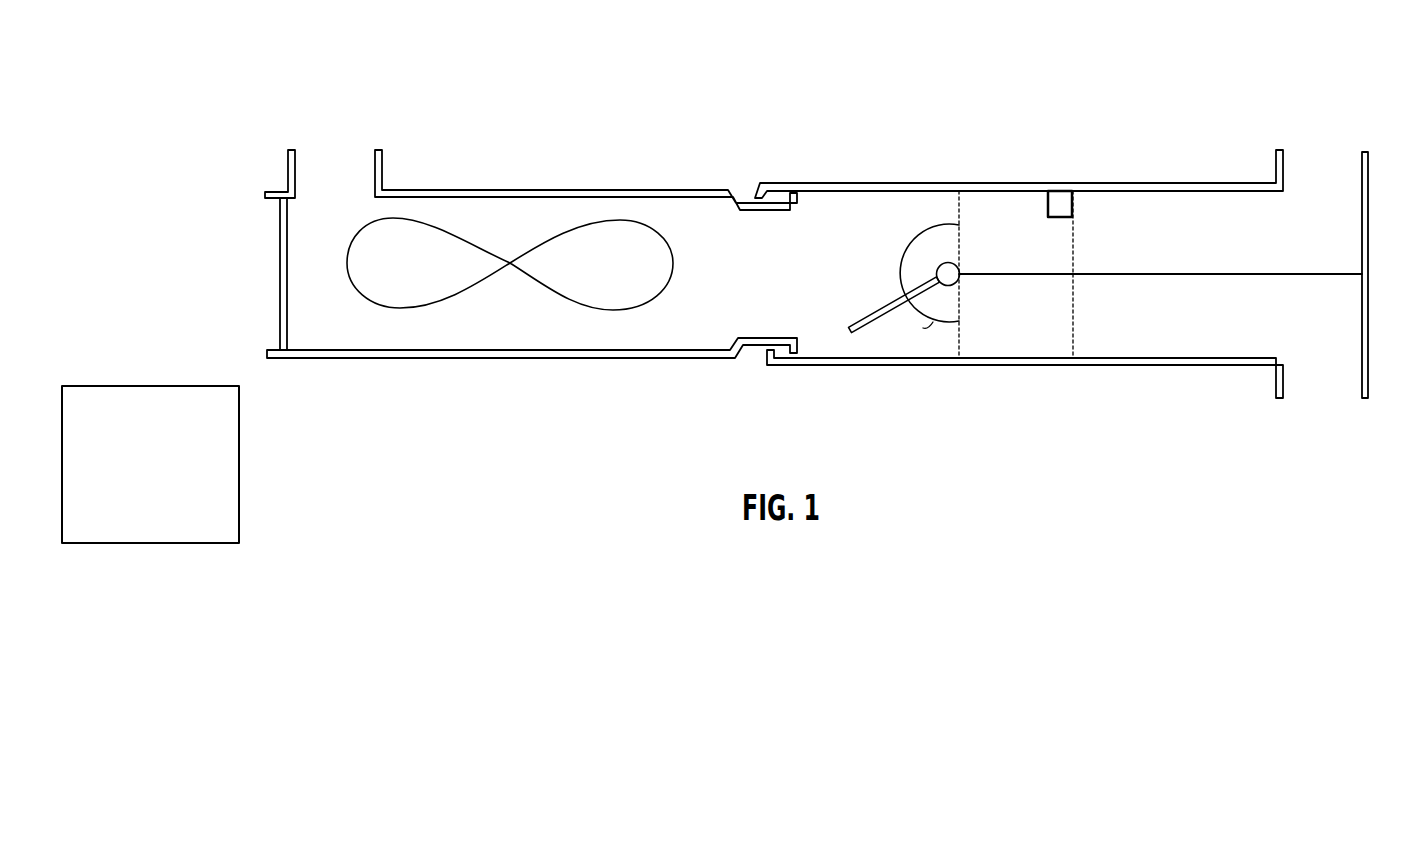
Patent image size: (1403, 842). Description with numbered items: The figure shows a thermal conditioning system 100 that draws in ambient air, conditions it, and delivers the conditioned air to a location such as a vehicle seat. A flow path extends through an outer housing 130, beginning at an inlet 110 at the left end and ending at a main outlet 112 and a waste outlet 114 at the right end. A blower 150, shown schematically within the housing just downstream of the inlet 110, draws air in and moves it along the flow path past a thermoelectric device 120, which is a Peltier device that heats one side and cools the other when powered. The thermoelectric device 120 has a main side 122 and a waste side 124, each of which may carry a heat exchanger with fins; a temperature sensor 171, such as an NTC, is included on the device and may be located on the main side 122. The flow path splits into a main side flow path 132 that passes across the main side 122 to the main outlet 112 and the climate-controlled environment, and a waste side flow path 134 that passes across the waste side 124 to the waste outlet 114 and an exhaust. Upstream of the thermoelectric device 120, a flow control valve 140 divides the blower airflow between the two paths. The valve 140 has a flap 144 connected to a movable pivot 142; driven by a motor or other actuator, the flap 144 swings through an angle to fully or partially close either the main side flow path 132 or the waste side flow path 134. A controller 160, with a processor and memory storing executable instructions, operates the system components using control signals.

The thermal conditioning system 100 is at (262, 76).
The inlet 110 is at (339, 158).
The main outlet 112 is at (1338, 156).
The waste outlet 114 is at (1318, 398).
The thermoelectric device (TED) 120 is at (1084, 261).
The main side 122 is at (1007, 200).
The waste side 124 is at (1008, 352).
The outer housing 130 is at (862, 365).
The main side flow path 132 is at (1169, 205).
The waste side flow path 134 is at (1154, 338).
The flow control valve 140 is at (874, 250).
The pivot 142 is at (947, 262).
The flap 144 is at (884, 300).
The blower 150 is at (412, 308).
The controller 160 is at (150, 464).
The temperature sensor 171 is at (1063, 192).